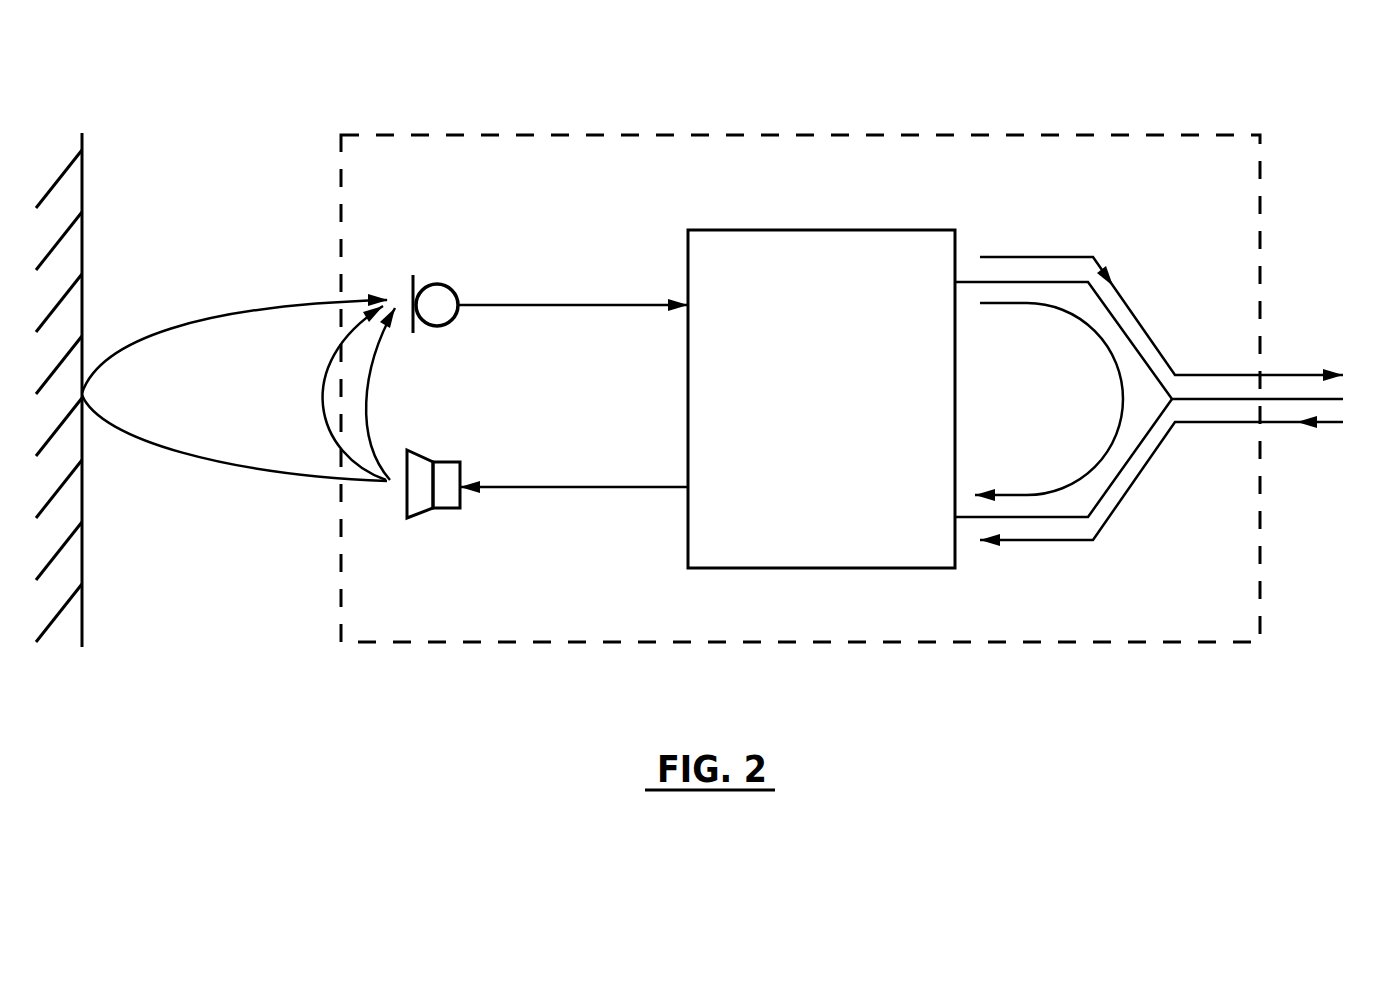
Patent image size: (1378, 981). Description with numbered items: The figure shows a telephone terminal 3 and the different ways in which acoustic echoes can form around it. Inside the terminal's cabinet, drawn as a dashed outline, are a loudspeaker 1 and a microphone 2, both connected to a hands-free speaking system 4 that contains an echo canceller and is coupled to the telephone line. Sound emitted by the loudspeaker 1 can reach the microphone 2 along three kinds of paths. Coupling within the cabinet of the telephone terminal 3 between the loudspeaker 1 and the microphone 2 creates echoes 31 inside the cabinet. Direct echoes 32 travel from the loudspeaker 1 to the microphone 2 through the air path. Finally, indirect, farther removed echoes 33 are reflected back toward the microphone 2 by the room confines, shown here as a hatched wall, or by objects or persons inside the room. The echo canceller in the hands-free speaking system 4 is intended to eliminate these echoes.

The loudspeaker 1 is at (420, 520).
The microphone 2 is at (442, 284).
The telephone terminal 3 is at (972, 644).
The hands-free speaking system 4 is at (931, 229).
The echoes inside the cabinet 31 is at (372, 348).
The direct echoes 32 is at (327, 358).
The indirect, farther removed echoes 33 is at (163, 450).